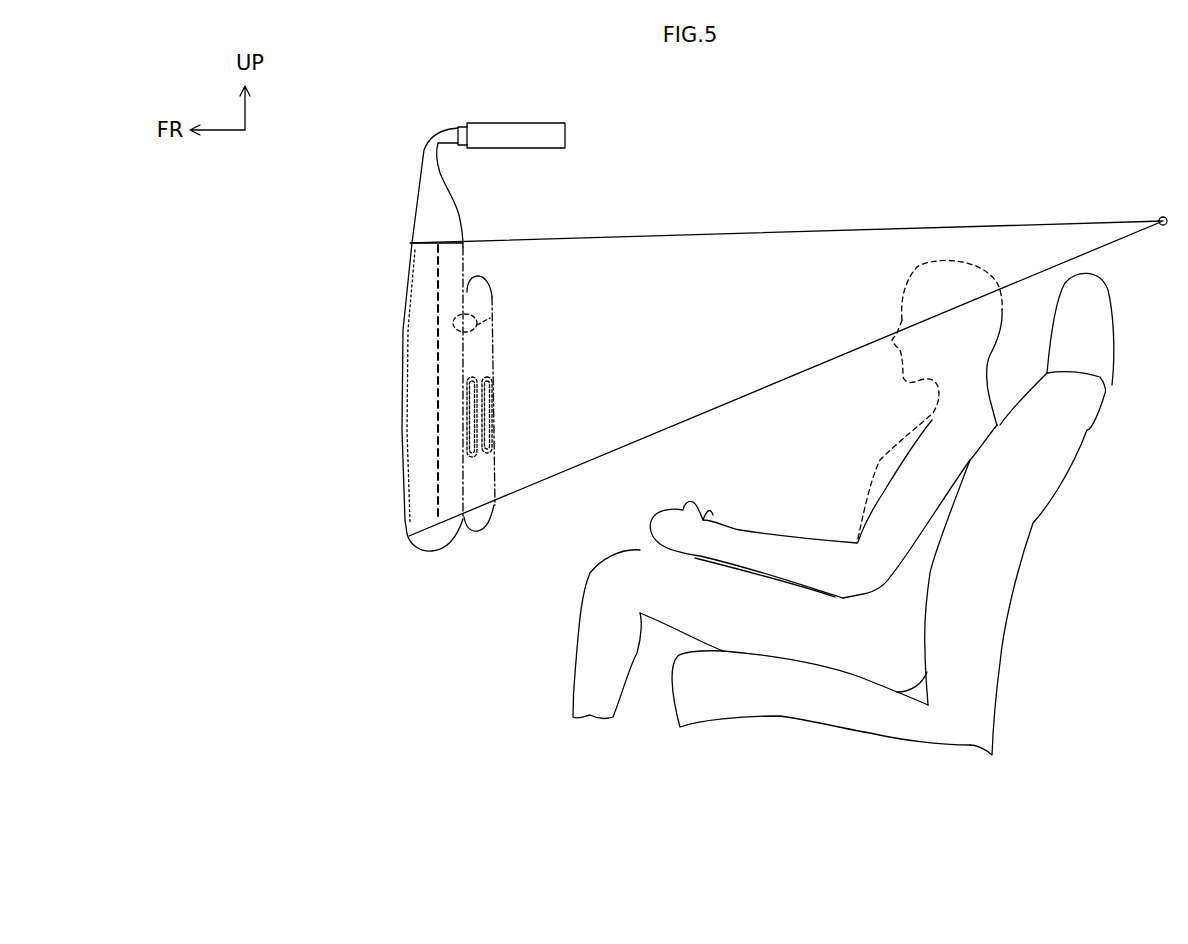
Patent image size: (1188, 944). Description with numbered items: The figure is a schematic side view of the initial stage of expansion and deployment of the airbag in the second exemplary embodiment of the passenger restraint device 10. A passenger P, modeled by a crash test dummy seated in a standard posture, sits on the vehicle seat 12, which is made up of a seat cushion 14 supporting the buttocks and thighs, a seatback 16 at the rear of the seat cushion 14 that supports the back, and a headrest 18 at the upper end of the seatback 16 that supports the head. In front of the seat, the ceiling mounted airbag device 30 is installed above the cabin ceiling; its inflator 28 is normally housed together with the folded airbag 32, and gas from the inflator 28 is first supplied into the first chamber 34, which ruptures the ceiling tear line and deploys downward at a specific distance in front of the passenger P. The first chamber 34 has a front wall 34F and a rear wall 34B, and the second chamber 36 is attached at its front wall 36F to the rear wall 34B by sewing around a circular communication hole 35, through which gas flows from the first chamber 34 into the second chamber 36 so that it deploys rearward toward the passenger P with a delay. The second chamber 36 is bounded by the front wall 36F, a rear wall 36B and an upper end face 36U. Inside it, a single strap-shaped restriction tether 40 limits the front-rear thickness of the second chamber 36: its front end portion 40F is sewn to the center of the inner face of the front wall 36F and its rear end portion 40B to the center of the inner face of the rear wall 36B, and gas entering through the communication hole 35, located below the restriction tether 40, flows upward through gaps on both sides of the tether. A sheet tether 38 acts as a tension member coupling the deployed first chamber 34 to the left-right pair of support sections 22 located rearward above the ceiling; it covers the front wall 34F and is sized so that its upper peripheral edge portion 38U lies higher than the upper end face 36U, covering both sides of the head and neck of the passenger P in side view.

The passenger restraint device 10 is at (601, 126).
The vehicle seat 12 is at (1129, 298).
The seat cushion 14 is at (838, 708).
The seatback 16 is at (1035, 520).
The headrest 18 is at (1100, 315).
The support sections 22 is at (1162, 216).
The inflator 28 is at (528, 133).
The ceiling mounted airbag device 30 is at (473, 174).
The airbag 32 is at (410, 230).
The first chamber 34 is at (442, 562).
The front wall of the first chamber 34F is at (407, 392).
The rear wall of the first chamber 34B is at (465, 262).
The communication hole 35 is at (467, 465).
The second chamber 36 is at (482, 542).
The upper end face of the second chamber 36U is at (470, 278).
The front wall of the second chamber 36F is at (490, 318).
The rear wall of the second chamber 36B is at (493, 358).
The sheet tether 38 is at (710, 259).
The upper peripheral edge portion of the sheet tether 38U is at (785, 232).
The restriction tether 40 is at (495, 423).
The front end portion of the restriction tether 40F is at (465, 398).
The rear end portion of the restriction tether 40B is at (495, 400).
The passenger P is at (885, 438).